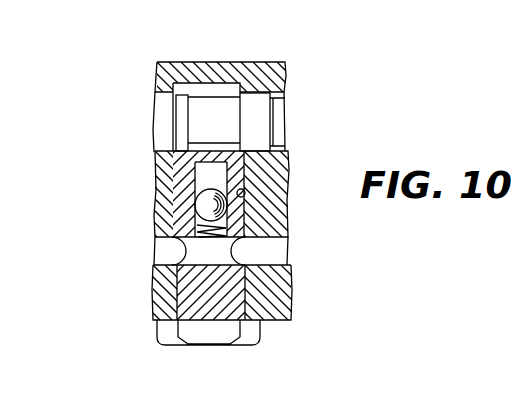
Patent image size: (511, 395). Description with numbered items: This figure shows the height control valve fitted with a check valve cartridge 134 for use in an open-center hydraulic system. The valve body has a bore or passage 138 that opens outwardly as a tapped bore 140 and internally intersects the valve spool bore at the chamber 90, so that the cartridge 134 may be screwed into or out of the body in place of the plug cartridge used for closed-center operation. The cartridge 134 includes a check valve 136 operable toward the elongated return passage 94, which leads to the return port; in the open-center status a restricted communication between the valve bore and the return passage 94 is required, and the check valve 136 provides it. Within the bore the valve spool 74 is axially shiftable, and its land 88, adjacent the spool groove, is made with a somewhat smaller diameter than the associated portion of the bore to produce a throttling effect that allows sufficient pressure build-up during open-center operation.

The chamber 90 is at (217, 84).
The valve spool 74 is at (280, 106).
The land 88 is at (183, 137).
The cartridge 134 is at (187, 187).
The check valve 136 is at (200, 210).
The bore or passage 138 is at (245, 191).
The return passage 94 is at (280, 253).
The tapped bore 140 is at (173, 291).